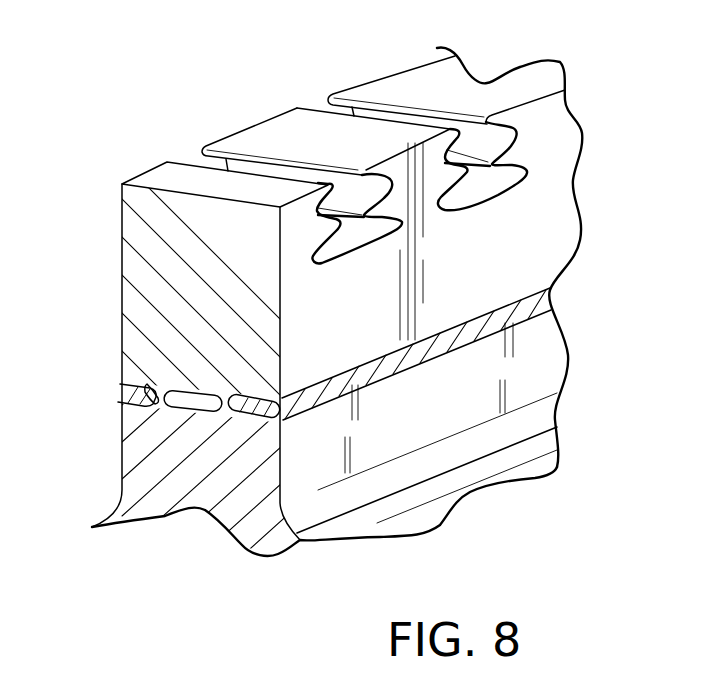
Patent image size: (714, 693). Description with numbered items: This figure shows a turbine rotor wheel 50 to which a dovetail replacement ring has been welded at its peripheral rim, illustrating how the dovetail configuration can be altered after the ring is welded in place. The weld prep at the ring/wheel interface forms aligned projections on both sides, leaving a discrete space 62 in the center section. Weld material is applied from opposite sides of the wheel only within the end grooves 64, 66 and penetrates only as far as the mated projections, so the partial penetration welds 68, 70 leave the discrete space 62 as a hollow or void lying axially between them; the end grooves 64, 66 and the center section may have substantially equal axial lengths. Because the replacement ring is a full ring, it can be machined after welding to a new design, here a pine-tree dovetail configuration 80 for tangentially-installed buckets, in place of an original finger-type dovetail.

The turbine rotor wheel 50 is at (570, 351).
The discrete space 62 is at (196, 397).
The end groove 64 is at (118, 385).
The end groove 66 is at (253, 395).
The partial penetration weld 68 is at (146, 384).
The partial penetration weld 70 is at (386, 364).
The pine-tree dovetail configuration 80 is at (174, 135).